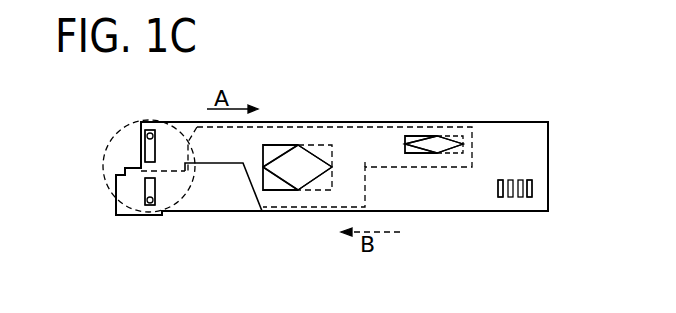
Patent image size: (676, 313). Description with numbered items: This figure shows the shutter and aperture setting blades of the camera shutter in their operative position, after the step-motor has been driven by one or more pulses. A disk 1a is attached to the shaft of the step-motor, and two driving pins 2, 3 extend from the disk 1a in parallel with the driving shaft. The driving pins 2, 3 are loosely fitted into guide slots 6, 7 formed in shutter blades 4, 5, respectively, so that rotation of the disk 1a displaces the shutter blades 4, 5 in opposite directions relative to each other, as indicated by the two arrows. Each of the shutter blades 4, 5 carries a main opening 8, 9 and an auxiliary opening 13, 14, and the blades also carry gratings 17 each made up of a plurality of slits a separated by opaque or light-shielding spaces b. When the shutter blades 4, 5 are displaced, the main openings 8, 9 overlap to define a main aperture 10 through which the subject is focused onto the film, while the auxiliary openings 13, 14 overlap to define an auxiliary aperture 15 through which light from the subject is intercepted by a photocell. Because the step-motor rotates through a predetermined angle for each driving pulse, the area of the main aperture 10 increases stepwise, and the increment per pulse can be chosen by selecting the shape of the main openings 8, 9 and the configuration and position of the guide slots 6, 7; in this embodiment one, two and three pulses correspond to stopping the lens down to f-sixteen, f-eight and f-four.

The disk 1a is at (104, 176).
The driving pin 2 is at (150, 134).
The driving pin 3 is at (150, 203).
The shutter blade 4 is at (515, 122).
The shutter blade 5 is at (208, 212).
The guide slot 6 is at (148, 148).
The guide slot 7 is at (155, 188).
The main opening 8 is at (277, 152).
The main opening 9 is at (318, 147).
The main aperture 10 is at (288, 168).
The auxiliary opening 13 is at (416, 155).
The auxiliary opening 14 is at (452, 134).
The auxiliary aperture 15 is at (435, 146).
The grating 17 is at (524, 172).
The slit a is at (529, 198).
The opaque space b is at (502, 198).